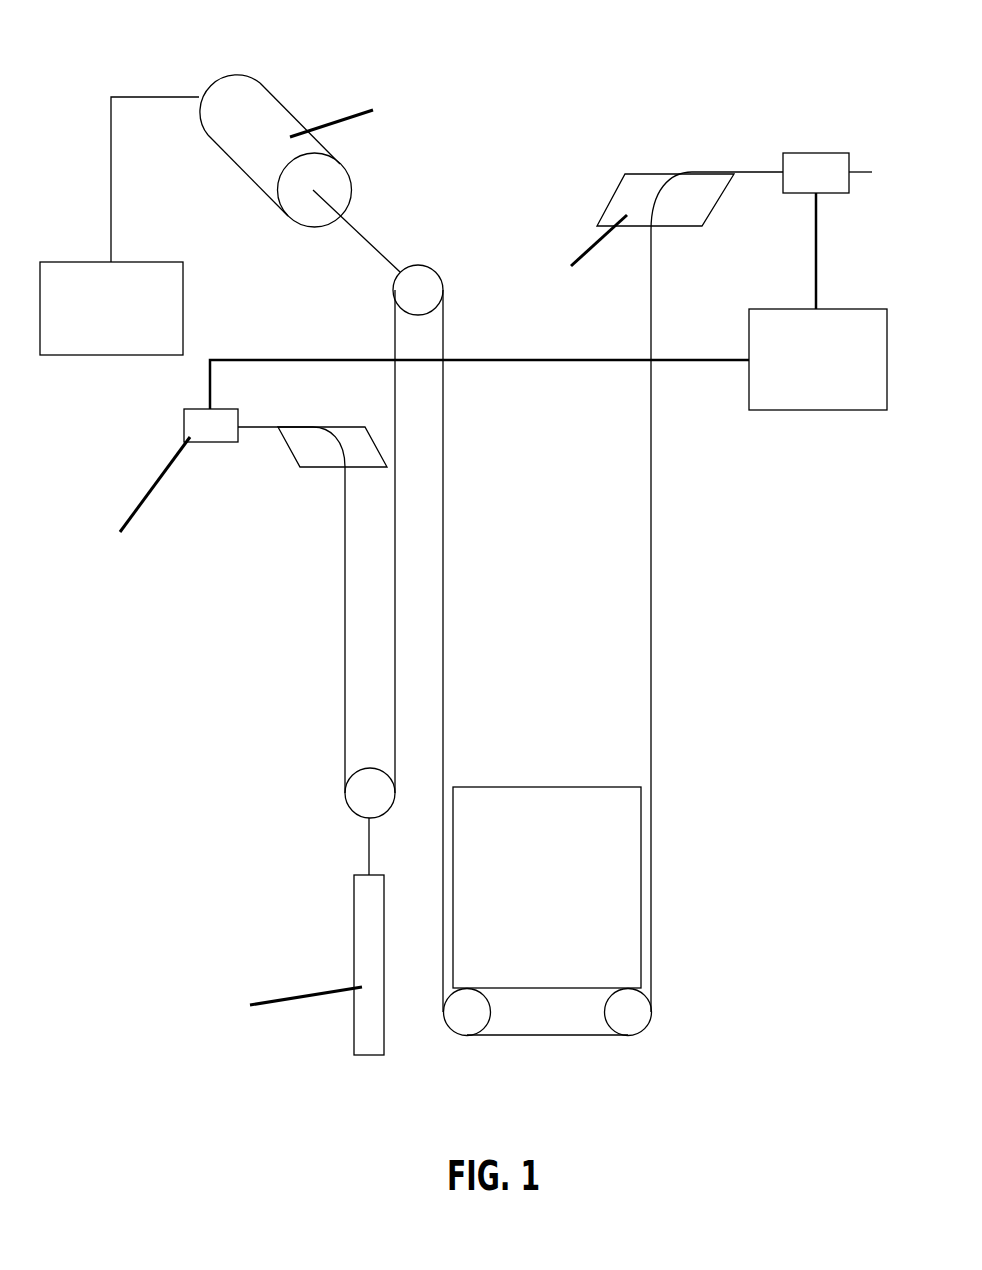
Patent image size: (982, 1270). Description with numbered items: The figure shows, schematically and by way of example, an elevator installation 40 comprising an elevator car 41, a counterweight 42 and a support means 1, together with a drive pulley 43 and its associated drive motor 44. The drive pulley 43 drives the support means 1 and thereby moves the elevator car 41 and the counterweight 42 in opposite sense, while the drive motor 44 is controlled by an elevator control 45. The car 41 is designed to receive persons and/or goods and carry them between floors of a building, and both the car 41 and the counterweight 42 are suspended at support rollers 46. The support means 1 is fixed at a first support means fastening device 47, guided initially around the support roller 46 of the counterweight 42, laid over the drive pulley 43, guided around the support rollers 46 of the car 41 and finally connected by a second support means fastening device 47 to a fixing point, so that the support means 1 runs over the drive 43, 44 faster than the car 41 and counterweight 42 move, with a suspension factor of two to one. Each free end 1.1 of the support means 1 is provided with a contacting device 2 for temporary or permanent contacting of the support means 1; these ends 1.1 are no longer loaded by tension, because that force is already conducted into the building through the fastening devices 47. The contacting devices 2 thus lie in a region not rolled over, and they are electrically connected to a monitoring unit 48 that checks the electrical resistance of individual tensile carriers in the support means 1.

The elevator installation 40 is at (523, 148).
The support means 1 is at (652, 587).
The free end of the support means 1.1 is at (872, 174).
The contacting device 2 is at (809, 161).
The elevator car 41 is at (592, 868).
The counterweight 42 is at (363, 947).
The drive pulley 43 is at (423, 278).
The drive motor 44 is at (260, 102).
The elevator control 45 is at (67, 272).
The support roller 46 is at (352, 795).
The support means fastening device 47 is at (640, 185).
The monitoring unit 48 is at (771, 397).